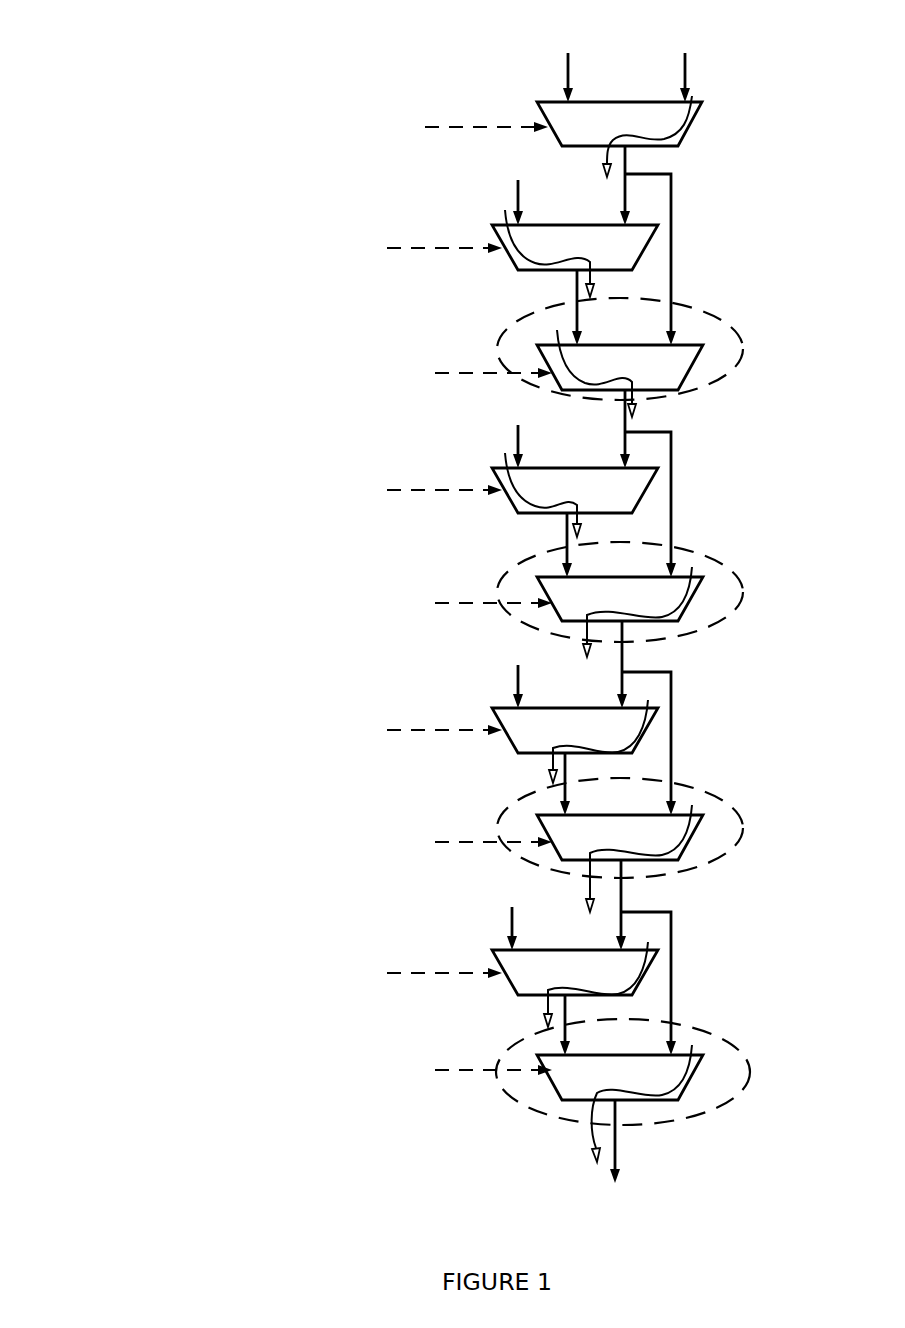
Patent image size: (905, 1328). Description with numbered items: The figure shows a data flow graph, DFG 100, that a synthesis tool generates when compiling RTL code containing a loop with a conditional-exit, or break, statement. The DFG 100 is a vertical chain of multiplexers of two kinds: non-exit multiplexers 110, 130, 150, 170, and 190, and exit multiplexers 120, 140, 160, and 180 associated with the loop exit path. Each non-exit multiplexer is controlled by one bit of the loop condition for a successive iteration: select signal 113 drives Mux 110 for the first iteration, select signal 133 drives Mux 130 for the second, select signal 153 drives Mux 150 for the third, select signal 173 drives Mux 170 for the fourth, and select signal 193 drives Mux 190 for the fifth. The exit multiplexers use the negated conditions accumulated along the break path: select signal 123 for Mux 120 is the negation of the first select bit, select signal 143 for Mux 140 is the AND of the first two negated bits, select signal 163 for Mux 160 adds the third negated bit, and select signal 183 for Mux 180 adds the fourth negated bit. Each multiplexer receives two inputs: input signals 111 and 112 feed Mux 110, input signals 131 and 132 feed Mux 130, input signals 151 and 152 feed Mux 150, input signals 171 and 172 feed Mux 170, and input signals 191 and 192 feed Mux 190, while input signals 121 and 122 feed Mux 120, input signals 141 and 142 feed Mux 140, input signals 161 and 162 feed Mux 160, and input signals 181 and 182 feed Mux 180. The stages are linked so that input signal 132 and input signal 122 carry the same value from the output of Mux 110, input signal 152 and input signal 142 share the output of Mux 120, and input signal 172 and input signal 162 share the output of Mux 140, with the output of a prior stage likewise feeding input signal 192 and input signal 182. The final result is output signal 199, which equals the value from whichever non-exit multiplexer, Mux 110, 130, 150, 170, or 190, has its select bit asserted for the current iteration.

The DFG 100 is at (248, 78).
The non-exit multiplexer 110 is at (670, 136).
The input signal 111 is at (552, 64).
The input signal 112 is at (697, 64).
The select signal 113 is at (443, 125).
The exit multiplexer 120 is at (670, 379).
The input signal 121 is at (598, 307).
The input signal 122 is at (671, 259).
The select signal 123 is at (441, 372).
The non-exit multiplexer 130 is at (626, 259).
The input signal 131 is at (492, 187).
The input signal 132 is at (601, 185).
The select signal 133 is at (395, 249).
The exit multiplexer 140 is at (670, 611).
The input signal 141 is at (587, 545).
The input signal 142 is at (671, 504).
The select signal 143 is at (400, 605).
The non-exit multiplexer 150 is at (626, 502).
The input signal 151 is at (492, 430).
The input signal 152 is at (601, 429).
The select signal 153 is at (394, 490).
The exit multiplexer 160 is at (670, 849).
The input signal 161 is at (586, 784).
The input signal 162 is at (669, 743).
The select signal 163 is at (360, 844).
The non-exit multiplexer 170 is at (626, 742).
The input signal 171 is at (492, 672).
The input signal 172 is at (600, 664).
The select signal 173 is at (395, 732).
The exit multiplexer 180 is at (670, 1089).
The input signal 181 is at (586, 1025).
The input signal 182 is at (669, 983).
The select signal 183 is at (345, 1084).
The non-exit multiplexer 190 is at (626, 984).
The input signal 191 is at (506, 913).
The input signal 192 is at (599, 905).
The select signal 193 is at (395, 972).
The output signal 199 is at (620, 1173).